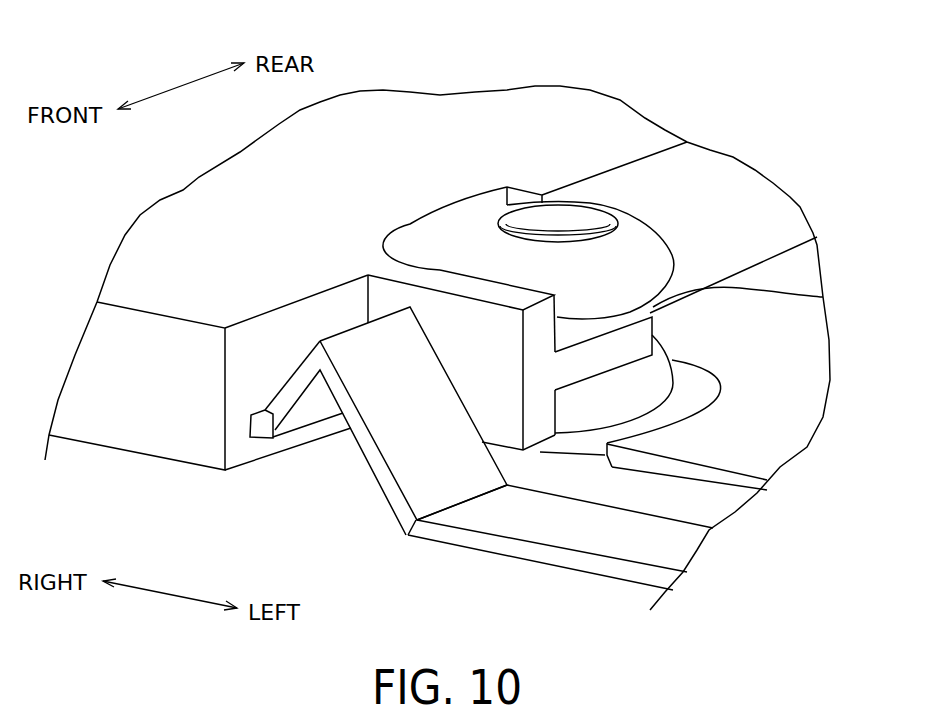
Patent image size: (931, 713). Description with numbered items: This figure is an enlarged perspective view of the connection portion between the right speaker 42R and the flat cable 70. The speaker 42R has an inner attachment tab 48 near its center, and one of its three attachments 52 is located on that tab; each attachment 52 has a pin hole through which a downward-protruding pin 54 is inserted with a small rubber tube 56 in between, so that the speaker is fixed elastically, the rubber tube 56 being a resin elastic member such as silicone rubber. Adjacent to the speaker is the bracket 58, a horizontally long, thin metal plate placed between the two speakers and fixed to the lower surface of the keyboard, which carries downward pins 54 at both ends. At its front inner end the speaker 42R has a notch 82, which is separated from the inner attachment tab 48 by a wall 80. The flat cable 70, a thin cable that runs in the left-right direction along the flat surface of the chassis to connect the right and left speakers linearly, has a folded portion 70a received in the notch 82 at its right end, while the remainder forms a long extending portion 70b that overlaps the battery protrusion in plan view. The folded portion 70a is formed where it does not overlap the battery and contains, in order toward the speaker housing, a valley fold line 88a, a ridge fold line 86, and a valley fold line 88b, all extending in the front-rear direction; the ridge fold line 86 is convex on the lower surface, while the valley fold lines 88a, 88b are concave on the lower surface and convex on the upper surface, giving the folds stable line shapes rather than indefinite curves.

The right speaker 42R is at (380, 133).
The inner attachment tab 48 is at (567, 333).
The attachment 52 is at (614, 384).
The pin 54 is at (562, 238).
The rubber tube 56 is at (653, 234).
The bracket 58 is at (770, 333).
The flat cable 70 is at (687, 467).
The folded portion 70a is at (338, 537).
The long extending portion 70b is at (627, 540).
The wall 80 is at (472, 288).
The notch 82 is at (258, 348).
The ridge fold line 86 is at (355, 323).
The valley fold line 88a is at (267, 430).
The valley fold line 88b is at (468, 498).